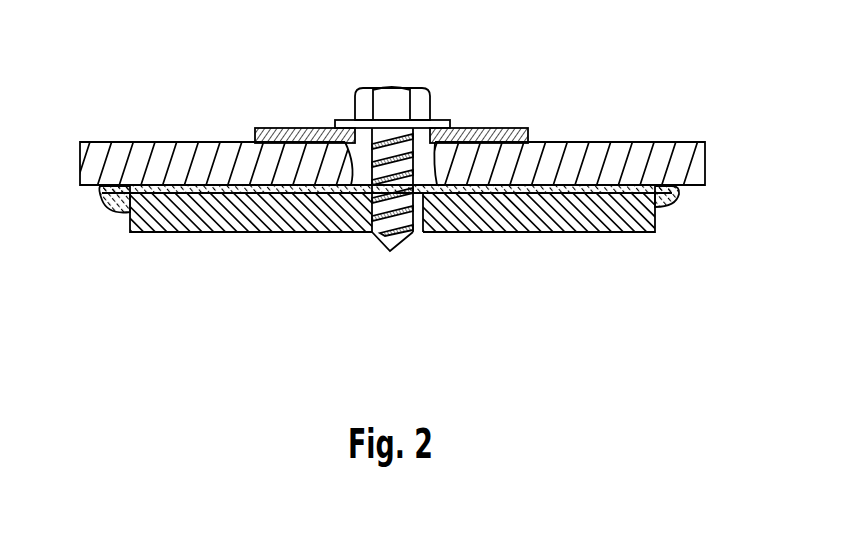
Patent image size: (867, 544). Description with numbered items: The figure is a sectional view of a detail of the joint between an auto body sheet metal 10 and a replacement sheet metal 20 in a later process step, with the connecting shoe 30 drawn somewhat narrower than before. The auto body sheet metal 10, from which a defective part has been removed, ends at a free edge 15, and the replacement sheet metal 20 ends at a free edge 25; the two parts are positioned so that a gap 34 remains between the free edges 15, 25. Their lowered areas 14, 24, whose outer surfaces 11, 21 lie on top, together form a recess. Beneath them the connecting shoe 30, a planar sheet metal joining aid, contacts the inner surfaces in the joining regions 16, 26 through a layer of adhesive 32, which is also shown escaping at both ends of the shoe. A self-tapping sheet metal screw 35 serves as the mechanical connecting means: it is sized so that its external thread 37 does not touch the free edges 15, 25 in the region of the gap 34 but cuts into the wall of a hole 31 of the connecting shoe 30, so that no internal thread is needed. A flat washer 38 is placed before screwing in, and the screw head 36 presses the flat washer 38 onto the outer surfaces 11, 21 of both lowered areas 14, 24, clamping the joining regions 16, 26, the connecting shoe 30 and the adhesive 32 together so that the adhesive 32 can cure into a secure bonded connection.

The auto body sheet metal 10 is at (100, 139).
The outer surface 11 is at (203, 138).
The lowered area 14 is at (143, 142).
The free edge 15 is at (343, 193).
The joining region 16 is at (250, 173).
The replacement sheet metal 20 is at (666, 139).
The outer surface 21 is at (593, 130).
The lowered area 24 is at (555, 141).
The free edge 25 is at (433, 193).
The joining region 26 is at (551, 169).
The connecting shoe 30 is at (180, 218).
The hole 31 is at (380, 236).
The adhesive 32 is at (112, 207).
The gap 34 is at (378, 194).
The self-tapping sheet metal screw 35 is at (387, 258).
The screw head 36 is at (394, 105).
The external thread 37 is at (423, 232).
The flat washer 38 is at (462, 130).